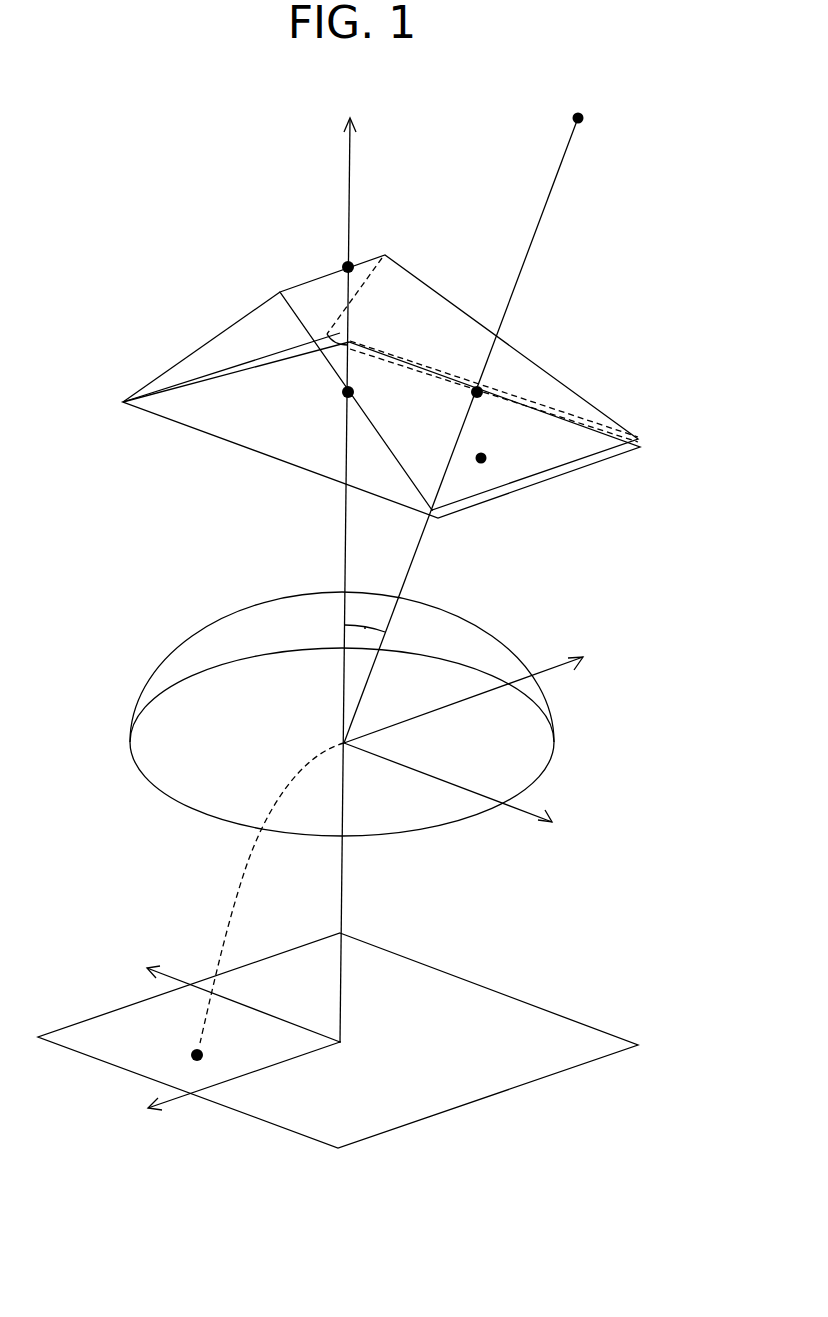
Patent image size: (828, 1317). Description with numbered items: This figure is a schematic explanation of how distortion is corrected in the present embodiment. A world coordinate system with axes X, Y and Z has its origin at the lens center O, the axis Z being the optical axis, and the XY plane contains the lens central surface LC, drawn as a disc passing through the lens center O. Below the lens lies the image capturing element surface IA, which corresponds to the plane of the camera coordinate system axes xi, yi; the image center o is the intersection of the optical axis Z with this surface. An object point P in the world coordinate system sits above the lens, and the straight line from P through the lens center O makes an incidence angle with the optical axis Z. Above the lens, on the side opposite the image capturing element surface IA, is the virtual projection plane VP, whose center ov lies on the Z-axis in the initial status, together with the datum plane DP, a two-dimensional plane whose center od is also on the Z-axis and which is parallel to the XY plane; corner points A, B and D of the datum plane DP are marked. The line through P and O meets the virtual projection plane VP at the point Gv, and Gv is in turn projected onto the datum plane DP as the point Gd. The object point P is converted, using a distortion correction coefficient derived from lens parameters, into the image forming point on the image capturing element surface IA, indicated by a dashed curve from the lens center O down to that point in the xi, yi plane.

The optical axis Z is at (359, 580).
The object point P is at (472, 428).
The virtual projection plane VP is at (553, 387).
The datum plane DP is at (265, 425).
The point A is at (187, 359).
The point B is at (337, 353).
The point D is at (441, 530).
The center of the virtual projection plane ov is at (328, 260).
The center of the datum plane od is at (327, 404).
The projected point on the virtual projection plane Gv is at (488, 407).
The projected point on the datum plane Gd is at (501, 459).
The lens central surface LC is at (523, 770).
The lens center O is at (342, 684).
The X-axis X is at (448, 799).
The Y-axis Y is at (463, 685).
The image capturing element surface IA is at (557, 1058).
The image center o is at (338, 1056).
The xi-axis of the camera coordinate system xi is at (226, 997).
The yi-axis of the camera coordinate system yi is at (228, 1085).